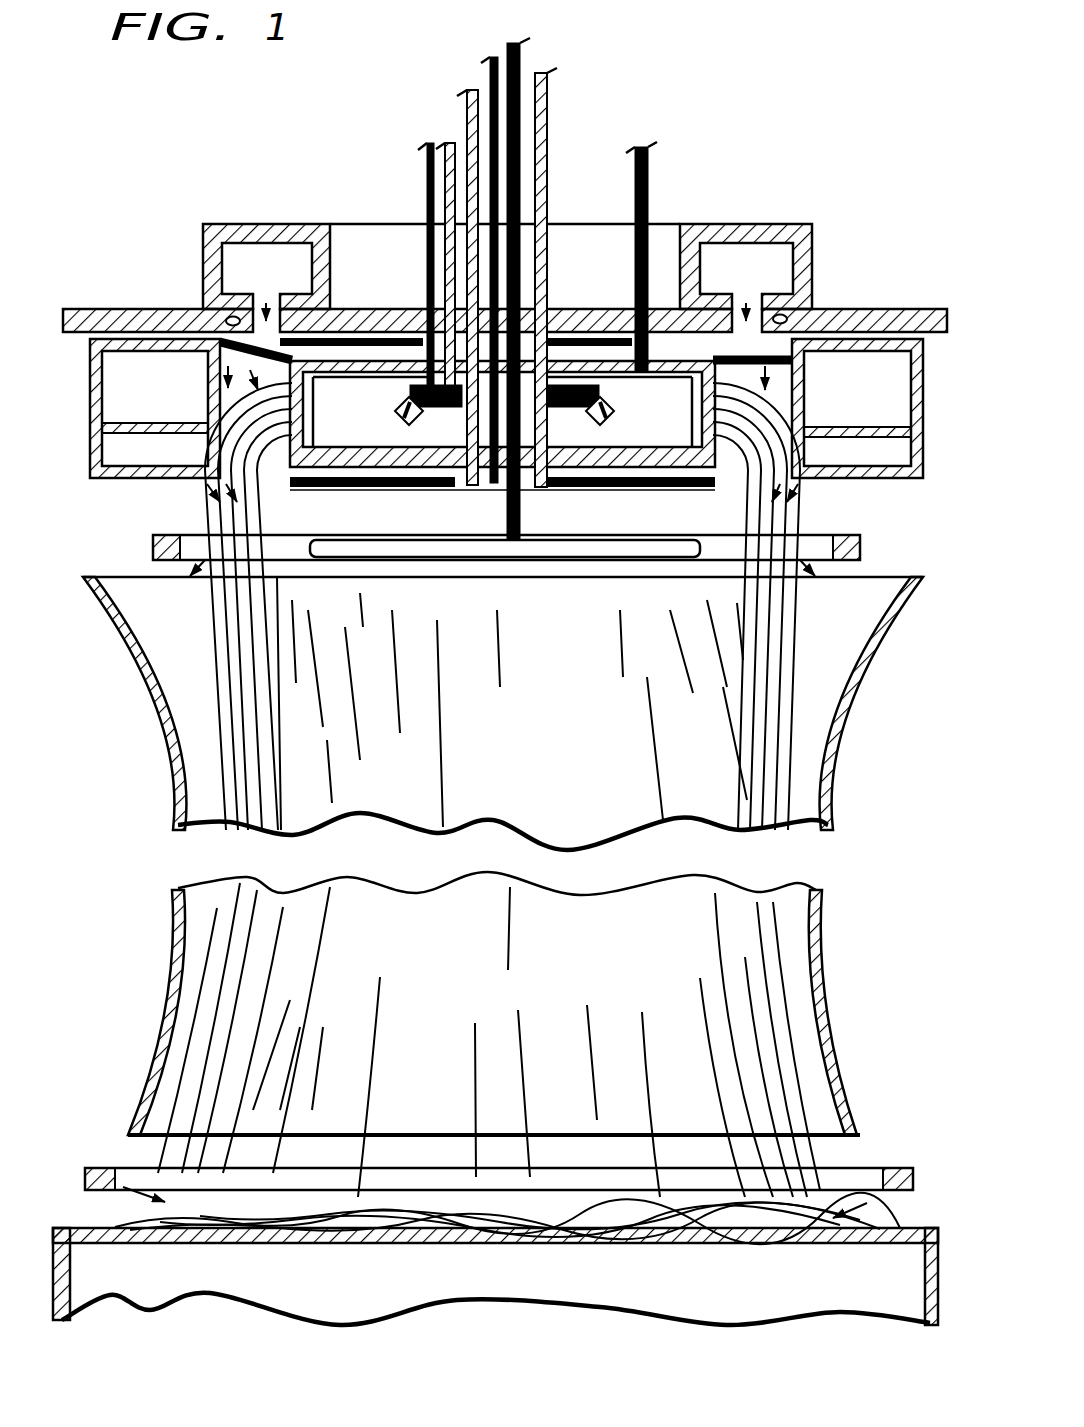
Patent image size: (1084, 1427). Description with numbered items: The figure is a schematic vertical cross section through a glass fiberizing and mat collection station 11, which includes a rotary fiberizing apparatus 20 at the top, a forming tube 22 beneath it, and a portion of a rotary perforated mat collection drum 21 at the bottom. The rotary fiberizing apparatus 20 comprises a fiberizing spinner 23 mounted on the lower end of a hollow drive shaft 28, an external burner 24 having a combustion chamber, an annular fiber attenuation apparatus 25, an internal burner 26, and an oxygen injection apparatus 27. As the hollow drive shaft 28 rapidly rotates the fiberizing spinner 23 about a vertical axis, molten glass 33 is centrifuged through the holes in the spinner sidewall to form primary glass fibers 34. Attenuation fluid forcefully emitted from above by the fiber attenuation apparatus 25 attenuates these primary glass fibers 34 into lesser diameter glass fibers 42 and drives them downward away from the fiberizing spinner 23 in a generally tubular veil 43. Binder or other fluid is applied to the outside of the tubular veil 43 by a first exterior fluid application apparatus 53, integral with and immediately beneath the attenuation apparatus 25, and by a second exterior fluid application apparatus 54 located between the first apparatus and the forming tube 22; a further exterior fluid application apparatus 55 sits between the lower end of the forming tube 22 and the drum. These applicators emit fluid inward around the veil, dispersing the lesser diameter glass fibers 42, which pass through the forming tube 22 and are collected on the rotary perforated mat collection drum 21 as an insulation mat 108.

The glass fiberizing and mat collection station 11 is at (716, 112).
The rotary fiberizing apparatus 20 is at (737, 198).
The rotary perforated mat collection drum 21 is at (524, 1289).
The forming tube 22 is at (853, 717).
The fiberizing spinner 23 is at (318, 428).
The external burner 24 is at (816, 250).
The fiber attenuation apparatus 25 is at (82, 412).
The internal burner 26 is at (432, 462).
The oxygen injection apparatus 27 is at (816, 312).
The hollow drive shaft 28 is at (549, 104).
The molten glass 33 is at (632, 195).
The primary glass fibers 34 is at (215, 388).
The lesser diameter glass fibers 42 is at (268, 490).
The tubular veil 43 is at (830, 512).
The first exterior fluid application apparatus 53 is at (857, 448).
The second exterior fluid application apparatus 54 is at (868, 548).
The exterior fluid application apparatus 55 is at (905, 1168).
The insulation mat 108 is at (842, 1216).